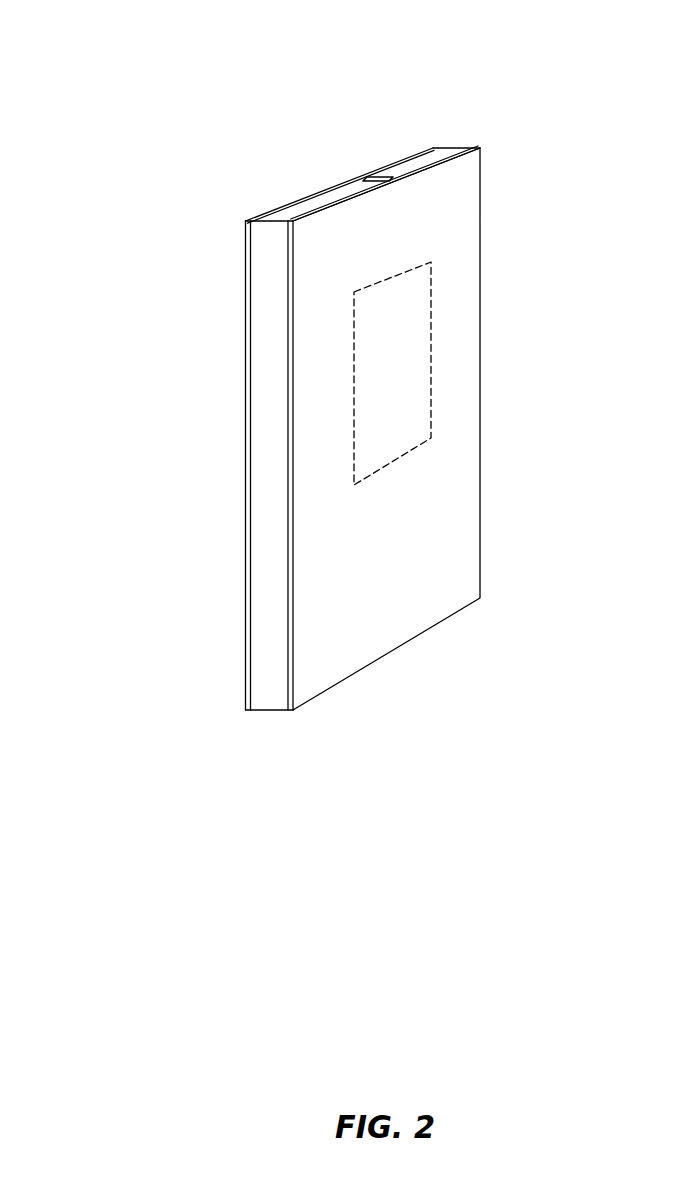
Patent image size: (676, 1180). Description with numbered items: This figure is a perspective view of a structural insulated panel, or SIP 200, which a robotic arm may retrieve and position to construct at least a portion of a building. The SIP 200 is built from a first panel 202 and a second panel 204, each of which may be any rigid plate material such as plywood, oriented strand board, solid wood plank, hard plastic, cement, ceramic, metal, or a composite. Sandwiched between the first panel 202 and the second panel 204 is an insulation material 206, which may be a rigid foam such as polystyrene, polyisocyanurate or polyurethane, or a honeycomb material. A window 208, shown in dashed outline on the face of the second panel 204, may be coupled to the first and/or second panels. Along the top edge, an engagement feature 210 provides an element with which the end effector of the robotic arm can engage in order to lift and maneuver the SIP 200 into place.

The SIP 200 is at (82, 87).
The first panel 202 is at (245, 278).
The second panel 204 is at (465, 205).
The insulation material 206 is at (270, 373).
The window 208 is at (415, 347).
The engagement feature 210 is at (382, 177).